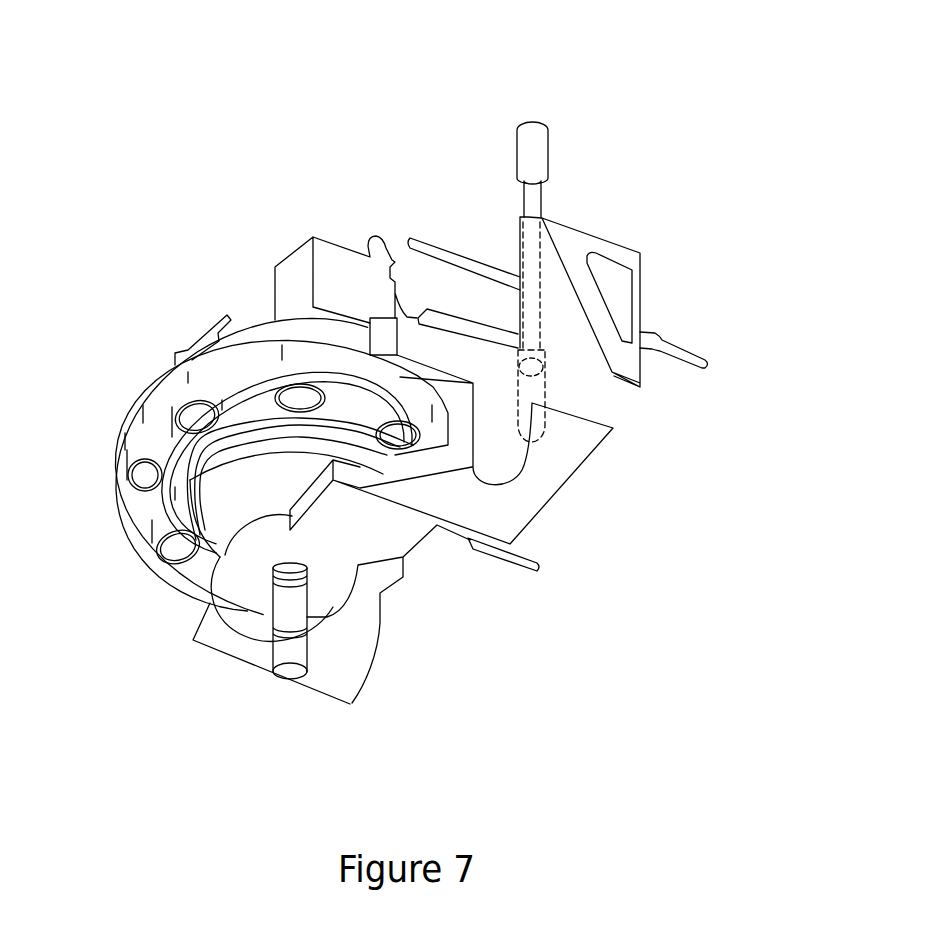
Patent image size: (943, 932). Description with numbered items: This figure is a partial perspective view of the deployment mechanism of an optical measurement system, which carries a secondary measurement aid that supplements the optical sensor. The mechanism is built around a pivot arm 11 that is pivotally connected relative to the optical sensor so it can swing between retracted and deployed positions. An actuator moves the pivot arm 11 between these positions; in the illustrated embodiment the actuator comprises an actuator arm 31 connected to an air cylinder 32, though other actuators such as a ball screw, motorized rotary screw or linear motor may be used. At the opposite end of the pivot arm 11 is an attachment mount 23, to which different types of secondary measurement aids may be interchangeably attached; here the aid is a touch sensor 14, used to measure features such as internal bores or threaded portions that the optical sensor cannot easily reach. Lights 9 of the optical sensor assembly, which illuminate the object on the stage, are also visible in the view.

The lights 9 is at (193, 417).
The pivot arm 11 is at (453, 491).
The touch sensor 14 is at (288, 672).
The attachment mount 23 is at (322, 588).
The actuator arm 31 is at (535, 368).
The air cylinder 32 is at (540, 133).